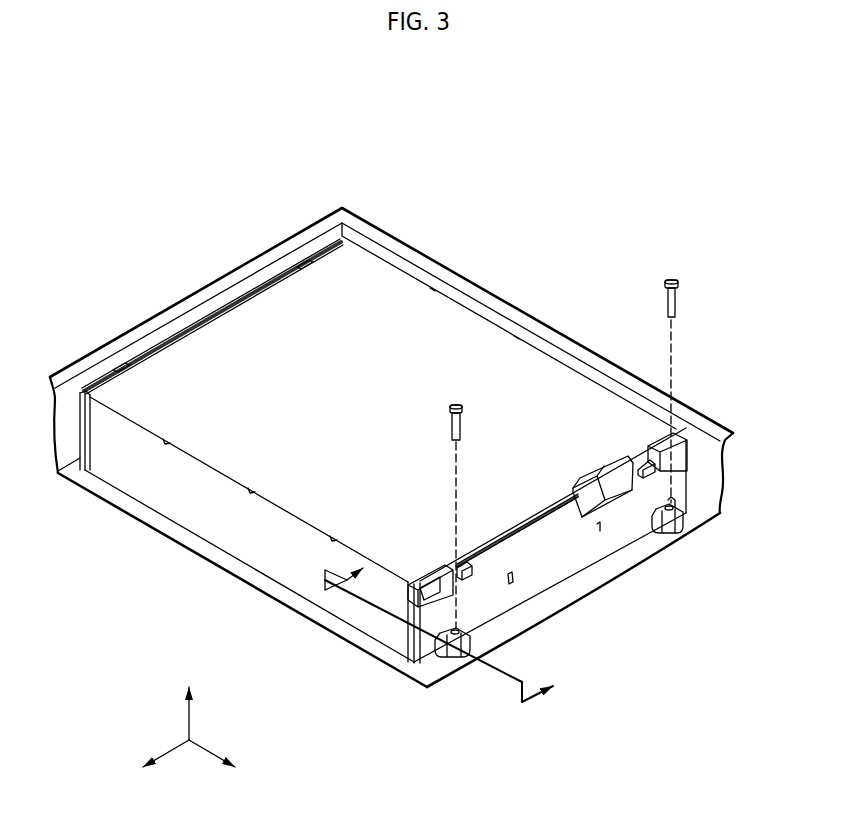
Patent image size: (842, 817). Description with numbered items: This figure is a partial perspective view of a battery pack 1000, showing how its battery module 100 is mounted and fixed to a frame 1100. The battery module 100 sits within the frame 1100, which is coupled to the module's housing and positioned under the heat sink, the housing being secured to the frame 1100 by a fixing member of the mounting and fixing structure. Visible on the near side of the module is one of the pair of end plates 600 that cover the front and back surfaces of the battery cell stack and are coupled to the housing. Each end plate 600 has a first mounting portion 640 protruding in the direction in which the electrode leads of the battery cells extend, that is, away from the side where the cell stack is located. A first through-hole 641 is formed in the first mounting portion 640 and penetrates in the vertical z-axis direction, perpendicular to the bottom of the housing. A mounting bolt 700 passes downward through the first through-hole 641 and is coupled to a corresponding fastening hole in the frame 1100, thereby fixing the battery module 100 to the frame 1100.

The battery pack 1000 is at (448, 121).
The frame 1100 is at (328, 222).
The battery module 100 is at (462, 337).
The end plate 600 is at (563, 562).
The first mounting portion 640 is at (683, 520).
The first through-hole 641 is at (690, 492).
The mounting bolt 700 is at (465, 407).